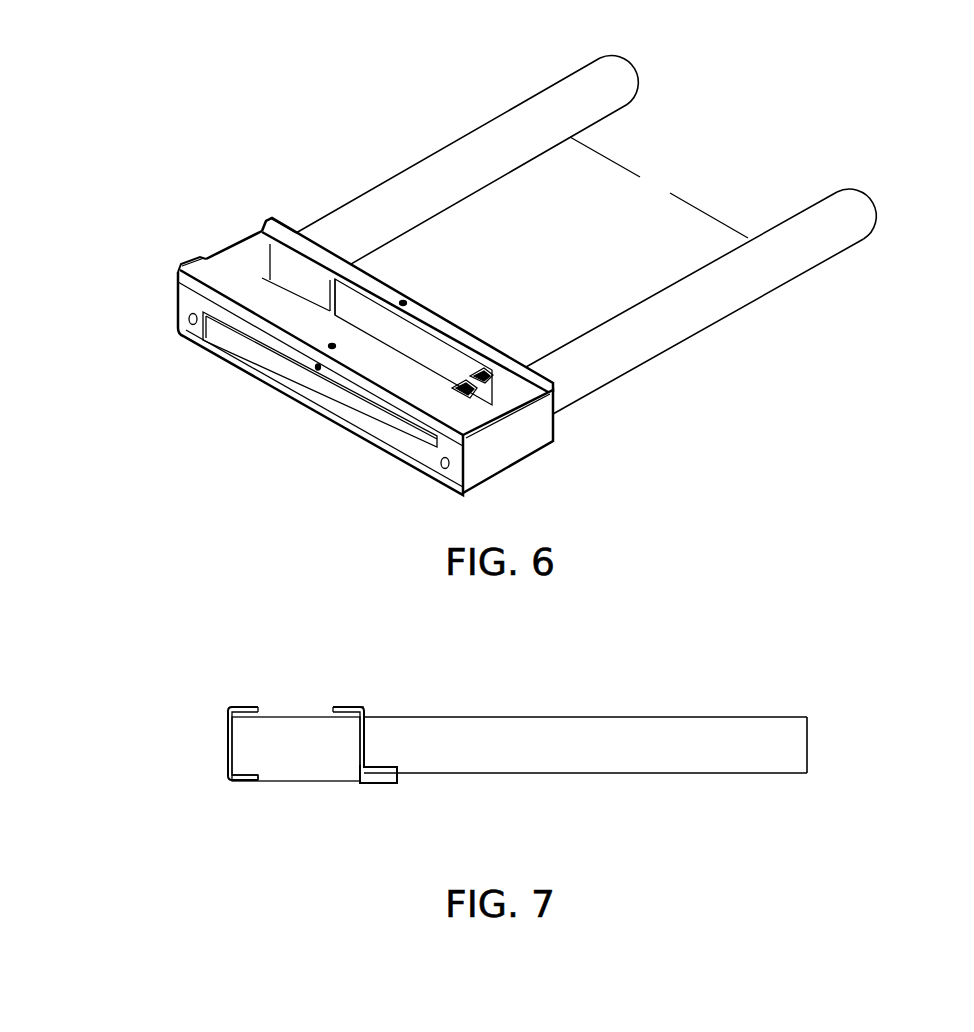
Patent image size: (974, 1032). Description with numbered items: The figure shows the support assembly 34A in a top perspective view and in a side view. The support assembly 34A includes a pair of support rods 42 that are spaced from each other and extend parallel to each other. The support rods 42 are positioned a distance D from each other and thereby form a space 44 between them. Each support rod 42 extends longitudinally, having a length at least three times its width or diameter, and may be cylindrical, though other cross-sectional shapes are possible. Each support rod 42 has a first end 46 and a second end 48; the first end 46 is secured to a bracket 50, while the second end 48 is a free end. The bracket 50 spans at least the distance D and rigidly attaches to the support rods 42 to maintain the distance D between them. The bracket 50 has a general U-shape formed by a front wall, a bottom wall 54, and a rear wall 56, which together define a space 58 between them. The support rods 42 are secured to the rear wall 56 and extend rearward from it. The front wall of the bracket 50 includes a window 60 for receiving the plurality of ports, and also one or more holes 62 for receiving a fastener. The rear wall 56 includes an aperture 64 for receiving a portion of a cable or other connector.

In FIG. 6, the support assembly 34A is at (248, 108).
In FIG. 6, the support rods 42 is at (617, 80).
In FIG. 7, the support rods 42 is at (566, 732).
In FIG. 6, the space 44 is at (543, 254).
In FIG. 6, the first end 46 is at (289, 215).
In FIG. 7, the first end 46 is at (368, 707).
In FIG. 6, the second end 48 is at (533, 85).
In FIG. 7, the second end 48 is at (808, 712).
In FIG. 6, the bracket 50 is at (197, 262).
In FIG. 7, the bracket 50 is at (243, 787).
In FIG. 6, the bottom wall 54 is at (340, 422).
In FIG. 7, the bottom wall 54 is at (228, 745).
In FIG. 6, the rear wall 56 is at (488, 410).
In FIG. 7, the rear wall 56 is at (300, 771).
In FIG. 6, the space 58 is at (310, 280).
In FIG. 7, the space 58 is at (368, 766).
In FIG. 6, the window 60 is at (268, 363).
In FIG. 6, the holes 62 is at (190, 318).
In FIG. 6, the aperture 64 is at (370, 312).
In FIG. 6, the distance D is at (659, 187).